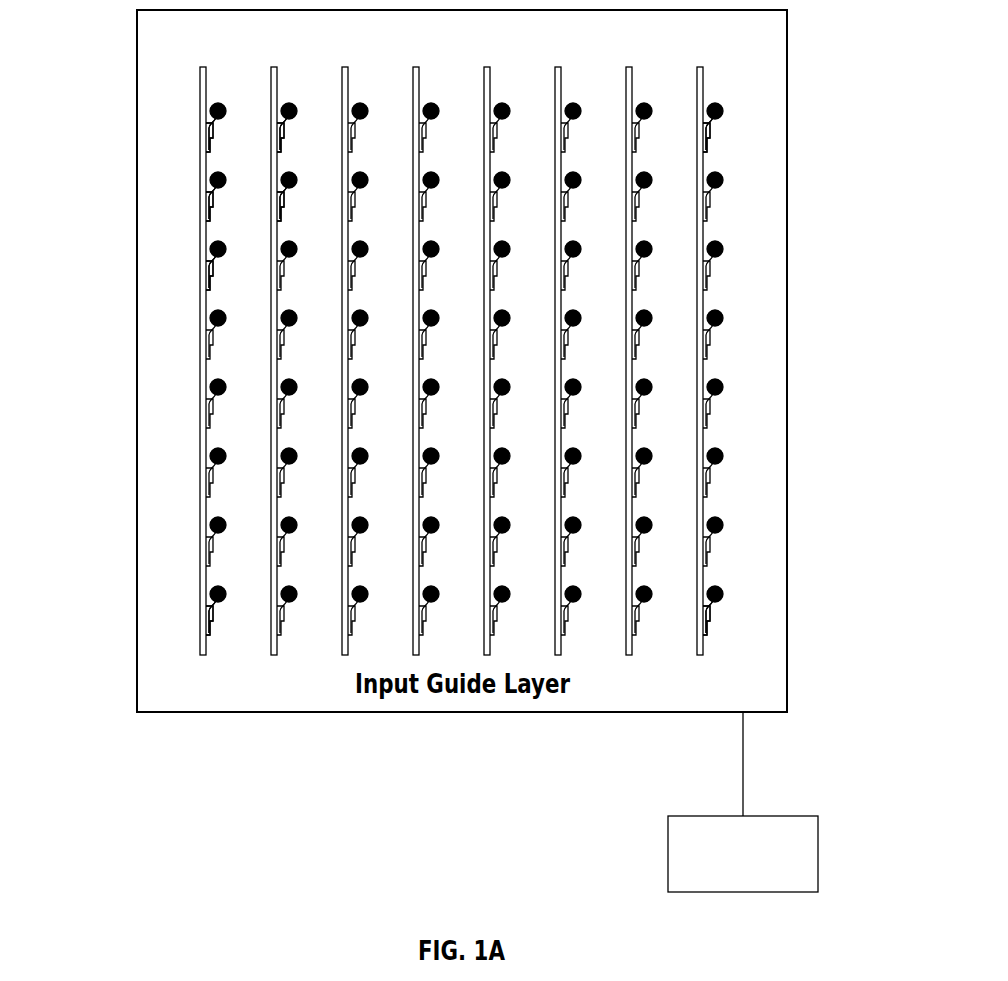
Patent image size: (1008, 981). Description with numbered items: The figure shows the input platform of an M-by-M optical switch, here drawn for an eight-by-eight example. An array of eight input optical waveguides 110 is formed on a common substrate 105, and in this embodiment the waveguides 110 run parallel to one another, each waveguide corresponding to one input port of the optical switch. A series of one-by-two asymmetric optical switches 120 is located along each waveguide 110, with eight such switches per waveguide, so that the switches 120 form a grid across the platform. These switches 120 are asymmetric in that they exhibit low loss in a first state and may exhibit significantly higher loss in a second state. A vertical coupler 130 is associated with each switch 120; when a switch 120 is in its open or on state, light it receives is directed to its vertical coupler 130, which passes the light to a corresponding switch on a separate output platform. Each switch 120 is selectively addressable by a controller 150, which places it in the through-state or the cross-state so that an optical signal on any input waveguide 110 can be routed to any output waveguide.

The common substrate 105 is at (775, 687).
The input optical waveguides 110 is at (452, 385).
The 1×2 asymmetric optical switches 120 is at (465, 340).
The vertical coupler 130 is at (210, 320).
The controller 150 is at (668, 855).